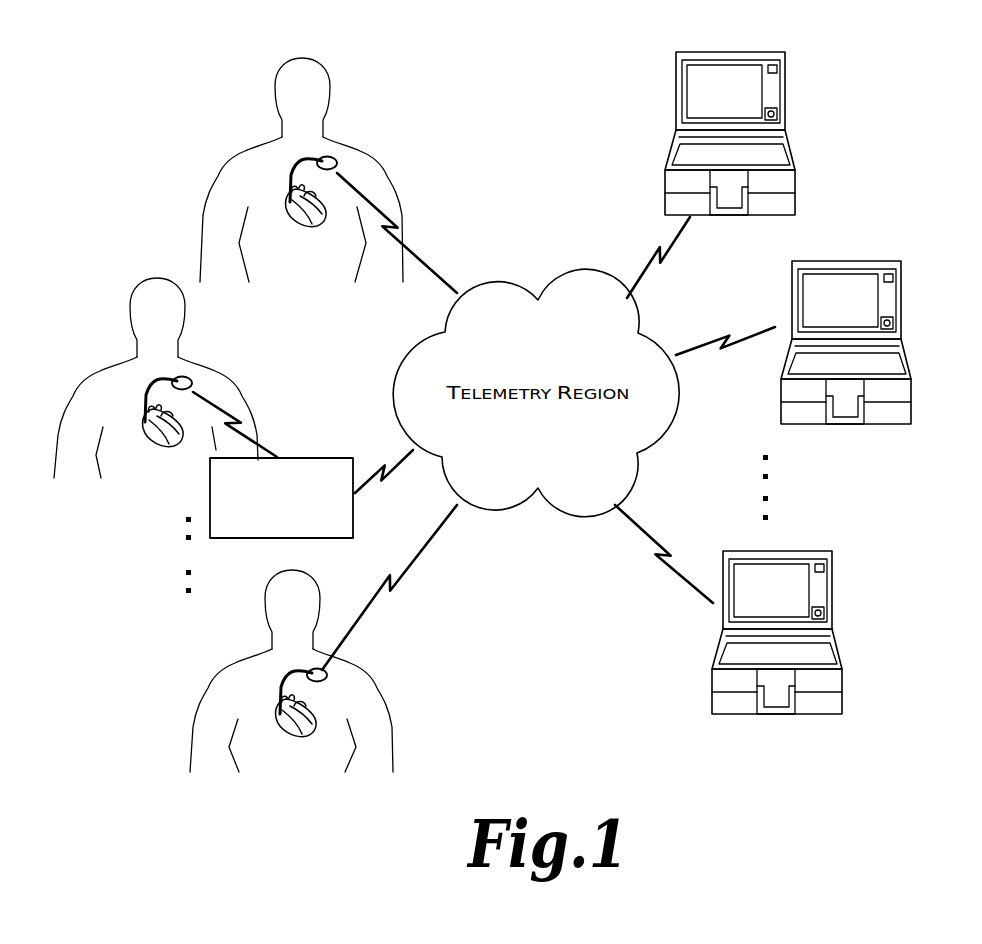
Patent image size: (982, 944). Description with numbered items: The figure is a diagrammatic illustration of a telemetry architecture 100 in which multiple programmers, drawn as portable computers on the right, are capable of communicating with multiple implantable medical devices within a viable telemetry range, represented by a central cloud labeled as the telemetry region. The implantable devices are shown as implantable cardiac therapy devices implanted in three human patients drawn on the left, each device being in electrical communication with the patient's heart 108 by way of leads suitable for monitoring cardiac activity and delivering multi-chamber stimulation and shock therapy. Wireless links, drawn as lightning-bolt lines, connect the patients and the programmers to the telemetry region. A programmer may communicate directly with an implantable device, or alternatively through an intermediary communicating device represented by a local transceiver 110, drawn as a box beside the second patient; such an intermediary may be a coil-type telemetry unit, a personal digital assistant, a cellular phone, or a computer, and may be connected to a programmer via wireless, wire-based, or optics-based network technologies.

The telemetry architecture 100 is at (488, 91).
The heart 108 is at (293, 207).
The local transceiver 110 is at (307, 458).